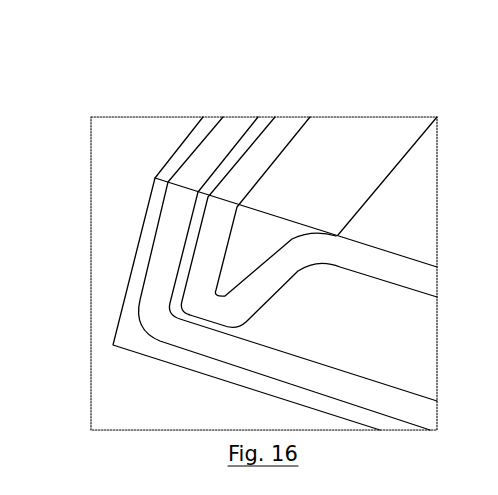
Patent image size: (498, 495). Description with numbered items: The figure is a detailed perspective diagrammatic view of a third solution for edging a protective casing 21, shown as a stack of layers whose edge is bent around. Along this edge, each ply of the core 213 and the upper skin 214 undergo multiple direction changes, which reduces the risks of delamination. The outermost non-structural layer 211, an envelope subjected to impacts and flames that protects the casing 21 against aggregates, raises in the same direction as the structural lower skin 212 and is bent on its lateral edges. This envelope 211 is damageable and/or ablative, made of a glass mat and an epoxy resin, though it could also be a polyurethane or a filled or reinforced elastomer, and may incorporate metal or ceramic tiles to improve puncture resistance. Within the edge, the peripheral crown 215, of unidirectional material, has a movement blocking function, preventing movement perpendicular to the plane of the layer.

The casing 21 is at (232, 248).
The non-structural layer 211 is at (198, 133).
The structural lower skin 212 is at (230, 137).
The core 213 is at (260, 132).
The upper skin 214 is at (278, 130).
The peripheral crown 215 is at (345, 137).